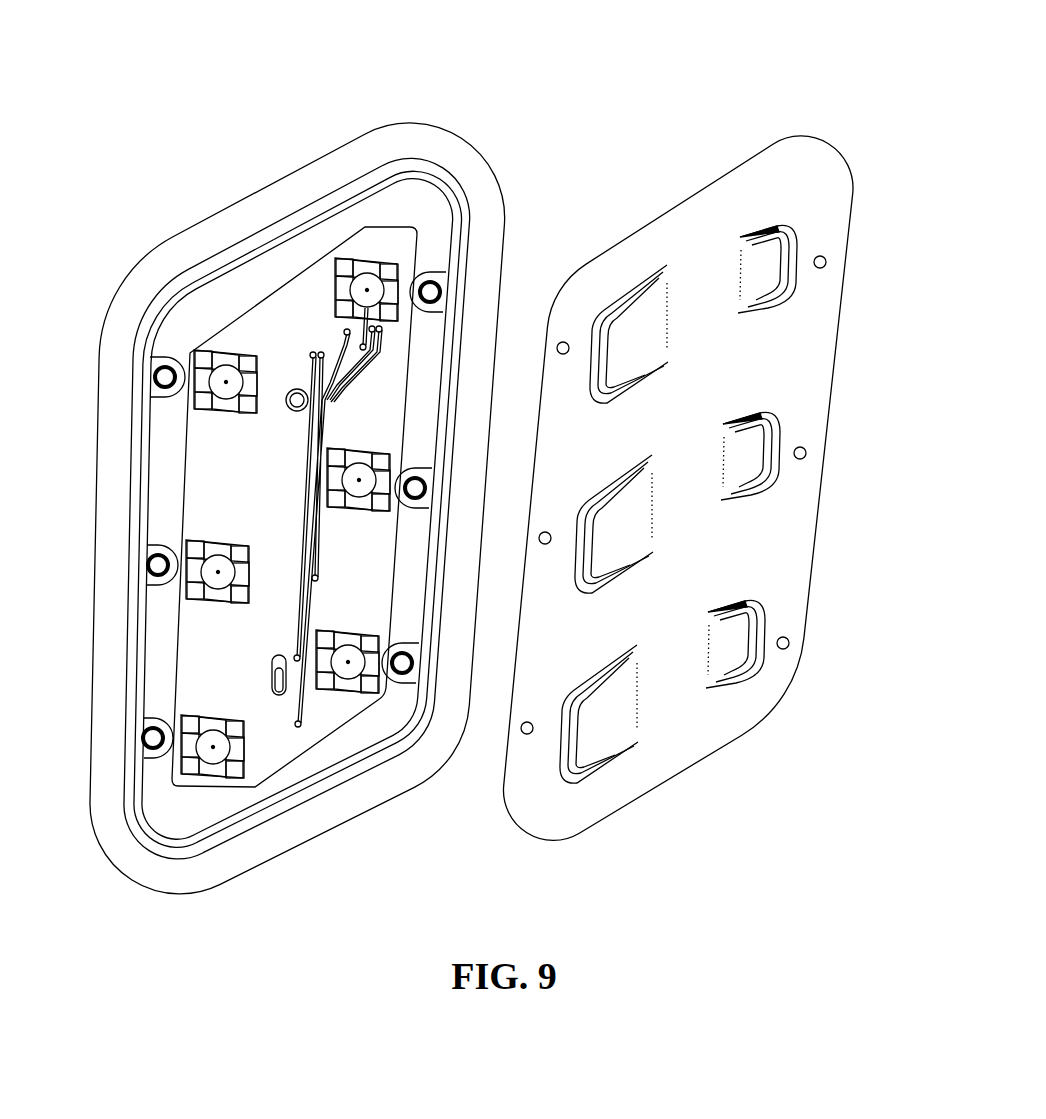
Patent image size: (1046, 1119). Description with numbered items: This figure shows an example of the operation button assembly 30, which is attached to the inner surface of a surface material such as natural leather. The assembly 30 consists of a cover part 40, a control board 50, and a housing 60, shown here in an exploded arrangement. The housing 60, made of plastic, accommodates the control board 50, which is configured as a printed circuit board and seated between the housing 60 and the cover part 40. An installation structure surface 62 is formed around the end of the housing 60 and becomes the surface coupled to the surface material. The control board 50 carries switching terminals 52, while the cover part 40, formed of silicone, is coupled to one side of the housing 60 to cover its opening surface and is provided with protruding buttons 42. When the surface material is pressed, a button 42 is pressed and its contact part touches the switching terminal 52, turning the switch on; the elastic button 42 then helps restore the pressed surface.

The operation button assembly 30 is at (598, 108).
The cover part 40 is at (837, 370).
The button 42 is at (802, 237).
The control board 50 is at (290, 317).
The switching terminal 52 is at (366, 288).
The housing 60 is at (276, 508).
The installation structure surface 62 is at (137, 302).